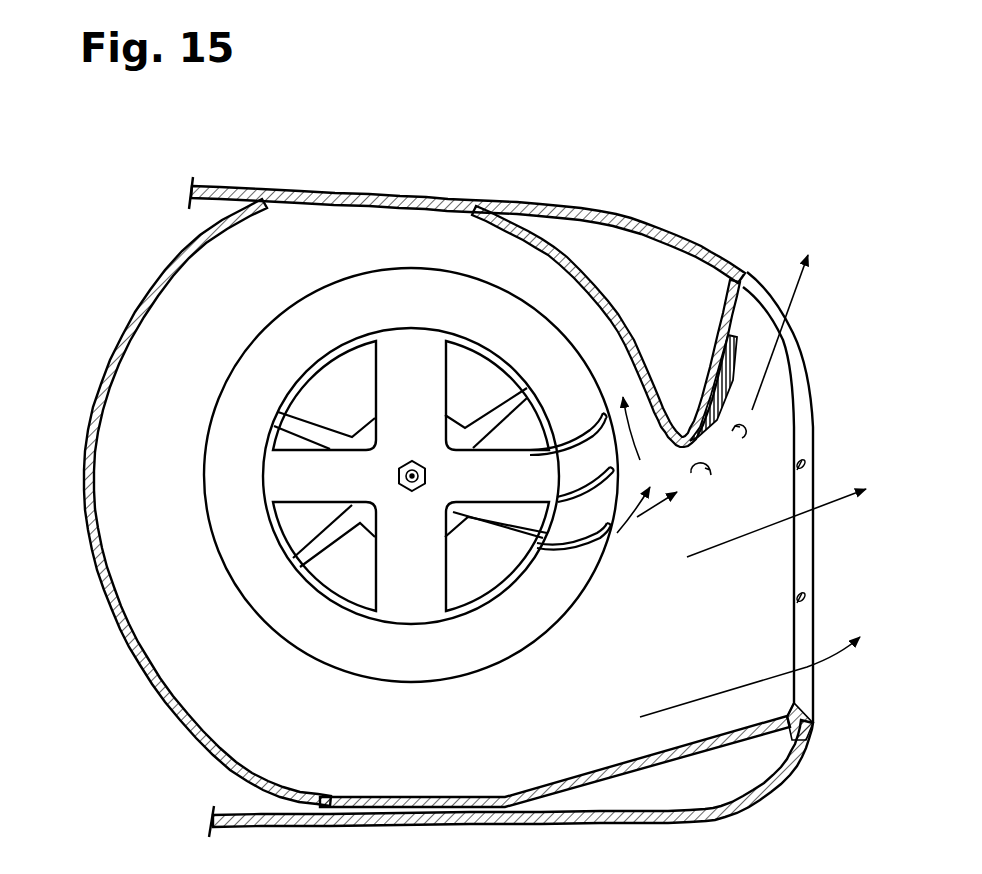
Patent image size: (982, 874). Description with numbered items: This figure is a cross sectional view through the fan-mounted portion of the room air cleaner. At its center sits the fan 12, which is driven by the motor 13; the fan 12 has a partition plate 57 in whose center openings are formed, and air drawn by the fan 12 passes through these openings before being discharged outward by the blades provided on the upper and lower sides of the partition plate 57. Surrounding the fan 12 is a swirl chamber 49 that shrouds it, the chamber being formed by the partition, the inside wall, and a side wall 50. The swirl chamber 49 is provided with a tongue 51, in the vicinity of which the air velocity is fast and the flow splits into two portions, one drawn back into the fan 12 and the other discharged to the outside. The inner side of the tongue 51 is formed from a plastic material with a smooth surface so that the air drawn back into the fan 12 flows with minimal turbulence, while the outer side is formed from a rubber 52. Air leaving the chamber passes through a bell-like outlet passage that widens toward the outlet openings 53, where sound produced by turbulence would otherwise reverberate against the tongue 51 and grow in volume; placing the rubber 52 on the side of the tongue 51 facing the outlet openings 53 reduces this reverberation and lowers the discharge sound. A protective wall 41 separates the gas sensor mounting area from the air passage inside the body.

The fan 12 is at (315, 660).
The motor 13 is at (347, 358).
The partition plate 57 is at (425, 353).
The protective wall 41 is at (490, 347).
The swirl chamber 49 is at (160, 368).
The side wall 50 is at (135, 676).
The tongue 51 is at (680, 383).
The rubber 52 is at (781, 271).
The outlet openings 53 is at (803, 566).